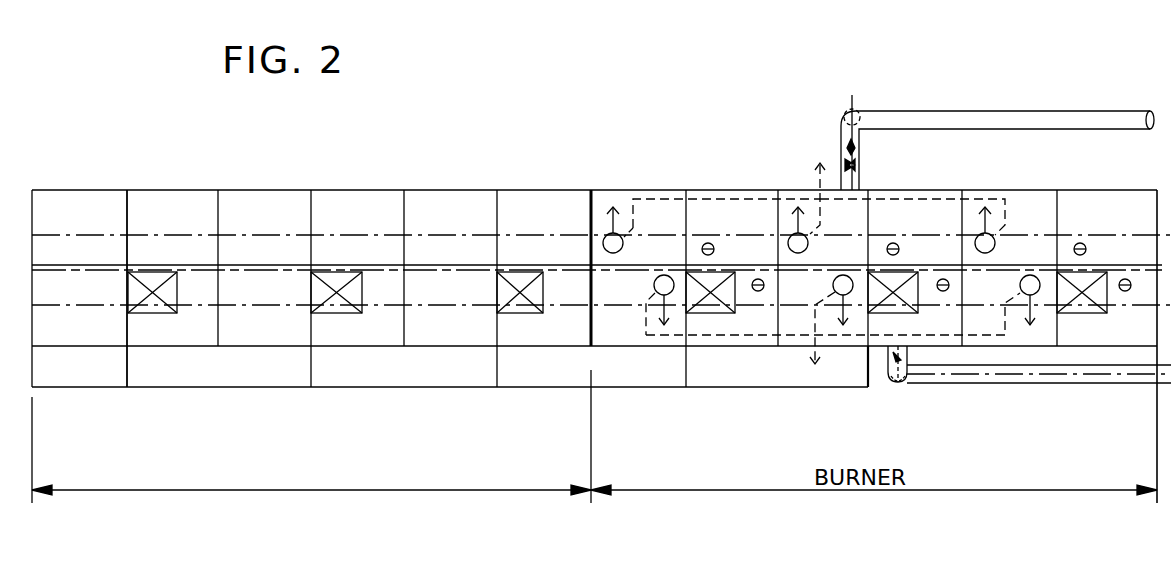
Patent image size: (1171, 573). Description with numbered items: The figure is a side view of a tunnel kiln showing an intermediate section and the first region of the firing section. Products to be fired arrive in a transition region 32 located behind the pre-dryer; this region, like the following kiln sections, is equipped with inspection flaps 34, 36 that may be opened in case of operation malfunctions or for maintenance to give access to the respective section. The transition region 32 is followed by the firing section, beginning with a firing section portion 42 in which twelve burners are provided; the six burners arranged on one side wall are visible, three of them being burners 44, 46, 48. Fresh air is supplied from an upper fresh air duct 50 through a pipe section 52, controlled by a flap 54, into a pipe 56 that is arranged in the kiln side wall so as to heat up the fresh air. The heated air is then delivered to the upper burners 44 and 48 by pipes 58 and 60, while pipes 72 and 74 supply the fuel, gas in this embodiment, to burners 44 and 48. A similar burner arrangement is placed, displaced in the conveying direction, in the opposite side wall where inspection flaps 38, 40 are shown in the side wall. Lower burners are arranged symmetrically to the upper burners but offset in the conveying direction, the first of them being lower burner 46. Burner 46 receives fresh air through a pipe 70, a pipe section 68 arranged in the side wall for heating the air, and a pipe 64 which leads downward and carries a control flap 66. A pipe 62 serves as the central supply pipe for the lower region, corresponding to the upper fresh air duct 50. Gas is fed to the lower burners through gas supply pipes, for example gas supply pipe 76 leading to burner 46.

The transition region 32 is at (228, 388).
The inspection flap 34 is at (155, 313).
The inspection flap 36 is at (337, 298).
The inspection flap 38 is at (715, 249).
The inspection flap 40 is at (759, 292).
The firing section portion 42 is at (665, 190).
The burner 44 is at (623, 246).
The lower burner 46 is at (654, 288).
The burner 48 is at (808, 247).
The upper fresh air duct 50 is at (1003, 113).
The pipe section 52 is at (858, 136).
The flap 54 is at (857, 165).
The pipe 56 is at (707, 199).
The pipe 58 is at (636, 199).
The pipe 60 is at (819, 164).
The pipe 62 is at (1045, 380).
The pipe 64 is at (890, 384).
The control flap 66 is at (906, 357).
The pipe section 68 is at (726, 338).
The pipe 70 is at (646, 320).
The pipe 72 is at (609, 218).
The pipe 74 is at (793, 212).
The gas supply pipe 76 is at (672, 316).